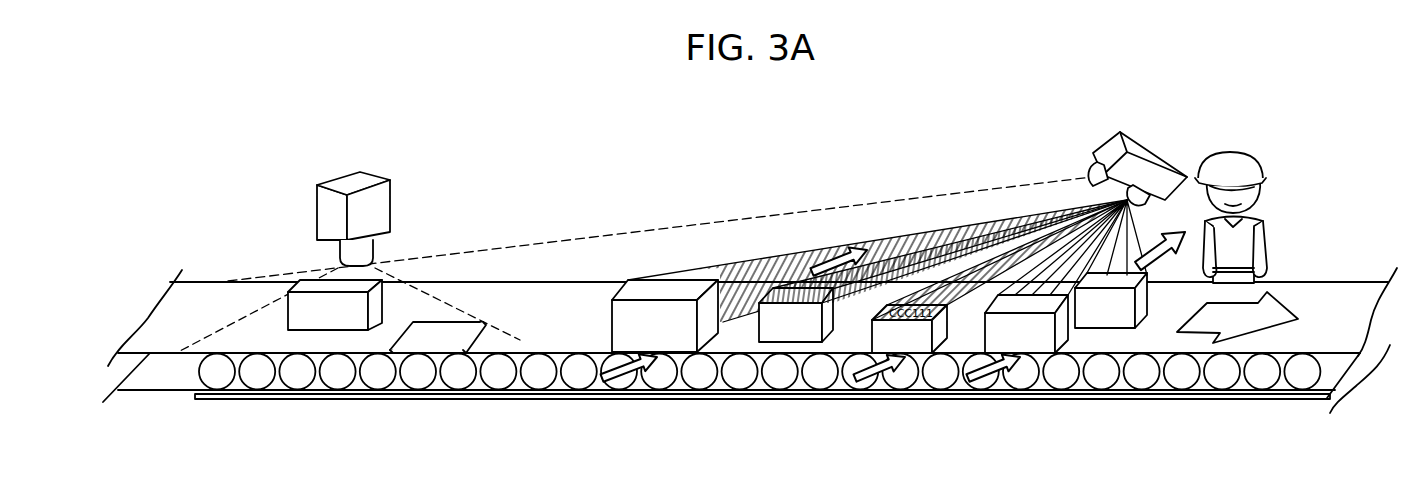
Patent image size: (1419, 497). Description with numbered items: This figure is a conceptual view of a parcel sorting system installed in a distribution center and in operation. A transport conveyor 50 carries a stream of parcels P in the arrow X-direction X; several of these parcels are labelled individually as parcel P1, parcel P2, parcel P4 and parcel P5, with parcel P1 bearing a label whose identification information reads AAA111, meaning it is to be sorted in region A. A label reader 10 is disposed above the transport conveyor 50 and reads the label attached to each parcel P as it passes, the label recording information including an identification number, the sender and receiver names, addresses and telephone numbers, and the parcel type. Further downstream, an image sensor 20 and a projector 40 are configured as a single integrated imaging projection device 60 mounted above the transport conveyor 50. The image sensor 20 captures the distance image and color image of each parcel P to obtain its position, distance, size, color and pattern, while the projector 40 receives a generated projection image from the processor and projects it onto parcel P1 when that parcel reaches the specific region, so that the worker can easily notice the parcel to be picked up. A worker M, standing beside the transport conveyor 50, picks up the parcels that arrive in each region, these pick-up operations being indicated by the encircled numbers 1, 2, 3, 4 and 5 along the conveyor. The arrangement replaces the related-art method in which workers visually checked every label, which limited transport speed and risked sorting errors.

The label reader 10 is at (354, 184).
The transport conveyor 50 is at (265, 289).
The parcel P is at (311, 284).
The parcel P1 is at (695, 270).
The parcel P2 is at (778, 270).
The parcel P4 is at (1037, 293).
The parcel P5 is at (1093, 268).
The imaging projection device 60 is at (1156, 142).
The image sensor 20 is at (1098, 174).
The projector 40 is at (1138, 195).
The worker M is at (1240, 163).
The encircled number 1 is at (622, 379).
The encircled number 2 is at (838, 258).
The encircled number 3 is at (868, 382).
The encircled number 4 is at (982, 382).
The encircled number 5 is at (1158, 258).
The arrow X-direction X is at (1237, 317).